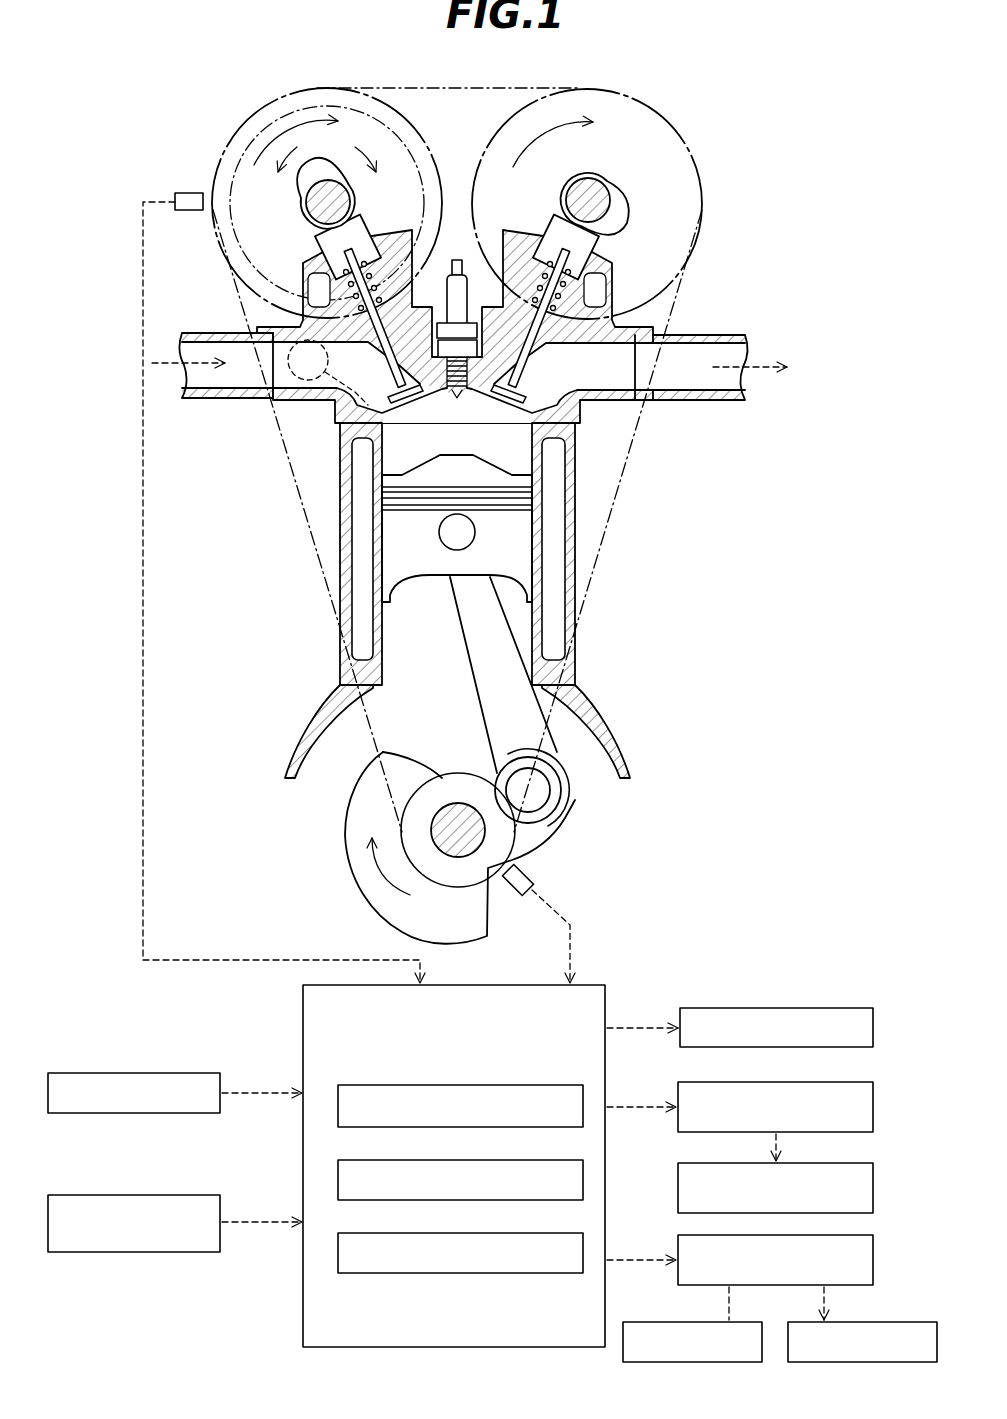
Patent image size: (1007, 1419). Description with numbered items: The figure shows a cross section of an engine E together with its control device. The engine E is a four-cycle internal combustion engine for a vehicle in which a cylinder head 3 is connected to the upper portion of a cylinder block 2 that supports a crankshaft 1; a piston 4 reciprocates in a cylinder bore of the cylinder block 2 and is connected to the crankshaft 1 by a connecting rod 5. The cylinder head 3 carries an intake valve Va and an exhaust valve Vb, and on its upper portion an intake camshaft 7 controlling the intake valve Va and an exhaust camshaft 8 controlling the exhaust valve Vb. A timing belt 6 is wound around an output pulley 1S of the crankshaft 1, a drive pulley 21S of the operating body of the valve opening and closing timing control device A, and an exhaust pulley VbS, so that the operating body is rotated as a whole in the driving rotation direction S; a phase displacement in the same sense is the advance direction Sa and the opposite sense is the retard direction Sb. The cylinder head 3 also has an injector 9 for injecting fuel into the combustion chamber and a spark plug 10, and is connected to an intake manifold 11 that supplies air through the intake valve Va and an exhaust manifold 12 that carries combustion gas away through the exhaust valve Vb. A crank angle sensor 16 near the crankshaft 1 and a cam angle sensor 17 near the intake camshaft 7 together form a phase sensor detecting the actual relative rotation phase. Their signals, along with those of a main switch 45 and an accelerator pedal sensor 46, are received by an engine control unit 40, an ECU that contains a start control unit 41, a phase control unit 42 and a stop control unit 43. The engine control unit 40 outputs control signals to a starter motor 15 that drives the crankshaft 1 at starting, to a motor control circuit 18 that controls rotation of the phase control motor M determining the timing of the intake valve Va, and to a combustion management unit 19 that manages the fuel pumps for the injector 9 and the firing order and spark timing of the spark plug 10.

The crankshaft 1 is at (458, 800).
The output pulley 1S is at (430, 875).
The cylinder block 2 is at (580, 582).
The cylinder head 3 is at (578, 410).
The piston 4 is at (522, 523).
The connecting rod 5 is at (468, 625).
The timing belt 6 is at (303, 530).
The intake camshaft 7 is at (305, 212).
The exhaust camshaft 8 is at (600, 182).
The injector 9 is at (333, 400).
The spark plug 10 is at (457, 260).
The intake manifold 11 is at (215, 332).
The exhaust manifold 12 is at (700, 335).
The starter motor 15 is at (840, 1008).
The crank angle sensor 16 is at (535, 875).
The cam angle sensor 17 is at (186, 193).
The motor control circuit 18 is at (840, 1082).
The combustion management unit 19 is at (840, 1235).
The drive pulley 21S is at (410, 115).
The engine control unit 40 is at (303, 1012).
The start control unit 41 is at (375, 1085).
The phase control unit 42 is at (375, 1160).
The stop control unit 43 is at (375, 1233).
The main switch 45 is at (160, 1073).
The accelerator pedal sensor 46 is at (160, 1195).
The valve opening and closing timing control device A is at (252, 140).
The engine E is at (226, 468).
The phase control motor M is at (840, 1163).
The driving rotation direction S is at (258, 135).
The advance direction Sa is at (376, 175).
The retard direction Sb is at (276, 175).
The intake valve Va is at (369, 338).
The exhaust valve Vb is at (515, 392).
The exhaust pulley VbS is at (510, 118).